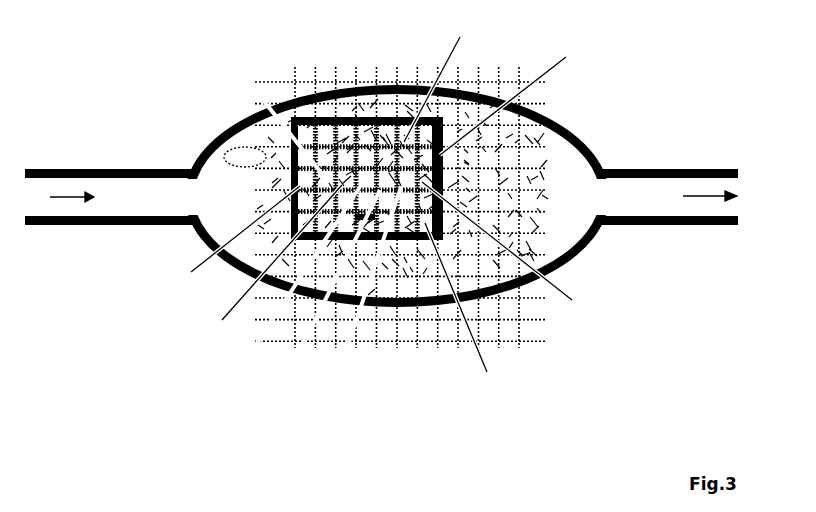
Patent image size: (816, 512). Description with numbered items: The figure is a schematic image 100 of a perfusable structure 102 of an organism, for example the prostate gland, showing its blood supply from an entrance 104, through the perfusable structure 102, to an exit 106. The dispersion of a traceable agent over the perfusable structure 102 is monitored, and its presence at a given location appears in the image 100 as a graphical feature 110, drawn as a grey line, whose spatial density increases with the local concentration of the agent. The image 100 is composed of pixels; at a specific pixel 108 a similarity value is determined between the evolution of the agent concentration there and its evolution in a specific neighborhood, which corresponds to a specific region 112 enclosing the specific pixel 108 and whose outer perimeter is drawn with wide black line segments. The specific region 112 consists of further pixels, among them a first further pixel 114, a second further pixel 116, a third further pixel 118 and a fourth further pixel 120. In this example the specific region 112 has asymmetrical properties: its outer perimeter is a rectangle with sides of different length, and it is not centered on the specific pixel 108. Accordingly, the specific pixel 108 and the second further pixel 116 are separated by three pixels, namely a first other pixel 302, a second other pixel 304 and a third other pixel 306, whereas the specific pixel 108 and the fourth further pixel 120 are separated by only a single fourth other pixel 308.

The image 100 is at (604, 408).
The perfusable structure 102 is at (572, 126).
The entrance 104 is at (105, 218).
The exit 106 is at (673, 217).
The specific pixel 108 is at (342, 185).
The feature 110 is at (243, 164).
The specific region 112 is at (440, 155).
The first further pixel 114 is at (425, 223).
The second further pixel 116 is at (422, 182).
The third further pixel 118 is at (404, 142).
The fourth further pixel 120 is at (300, 186).
The first other pixel 302 is at (360, 187).
The second other pixel 304 is at (380, 190).
The third other pixel 306 is at (401, 187).
The fourth other pixel 308 is at (327, 180).